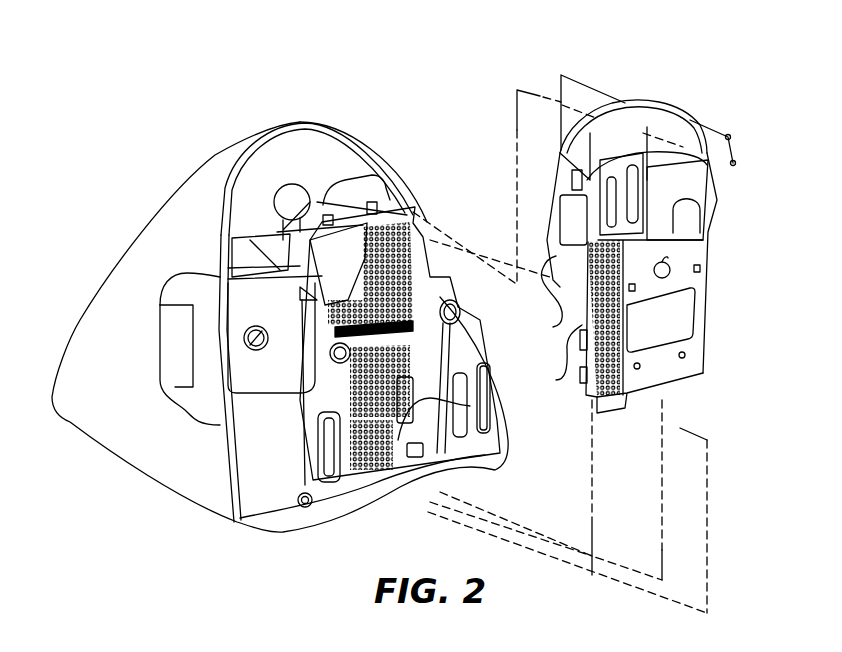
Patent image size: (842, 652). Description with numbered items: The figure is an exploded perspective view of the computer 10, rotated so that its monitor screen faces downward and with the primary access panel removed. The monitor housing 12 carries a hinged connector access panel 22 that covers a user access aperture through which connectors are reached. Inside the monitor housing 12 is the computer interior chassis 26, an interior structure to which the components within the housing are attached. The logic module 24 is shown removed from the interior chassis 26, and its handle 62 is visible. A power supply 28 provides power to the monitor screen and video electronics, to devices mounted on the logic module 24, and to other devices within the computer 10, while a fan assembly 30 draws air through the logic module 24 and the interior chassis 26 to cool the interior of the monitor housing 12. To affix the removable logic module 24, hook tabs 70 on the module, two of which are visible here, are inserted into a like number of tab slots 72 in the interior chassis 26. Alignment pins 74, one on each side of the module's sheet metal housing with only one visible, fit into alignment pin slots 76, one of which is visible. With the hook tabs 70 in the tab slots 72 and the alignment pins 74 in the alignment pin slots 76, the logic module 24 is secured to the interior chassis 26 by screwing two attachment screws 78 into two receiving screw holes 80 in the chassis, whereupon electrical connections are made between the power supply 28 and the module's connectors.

The computer 10 is at (112, 238).
The monitor housing 12 is at (118, 333).
The hinged connector access panel 22 is at (333, 358).
The logic module 24 is at (685, 360).
The computer interior chassis 26 is at (413, 222).
The power supply 28 is at (178, 323).
The fan assembly 30 is at (332, 254).
The handle 62 is at (620, 103).
The hook tabs 70 is at (553, 327).
The tab slots 72 is at (460, 297).
The alignment pins 74 is at (661, 320).
The alignment pin slots 76 is at (433, 340).
The attachment screws 78 is at (733, 145).
The receiving screw holes 80 is at (372, 202).